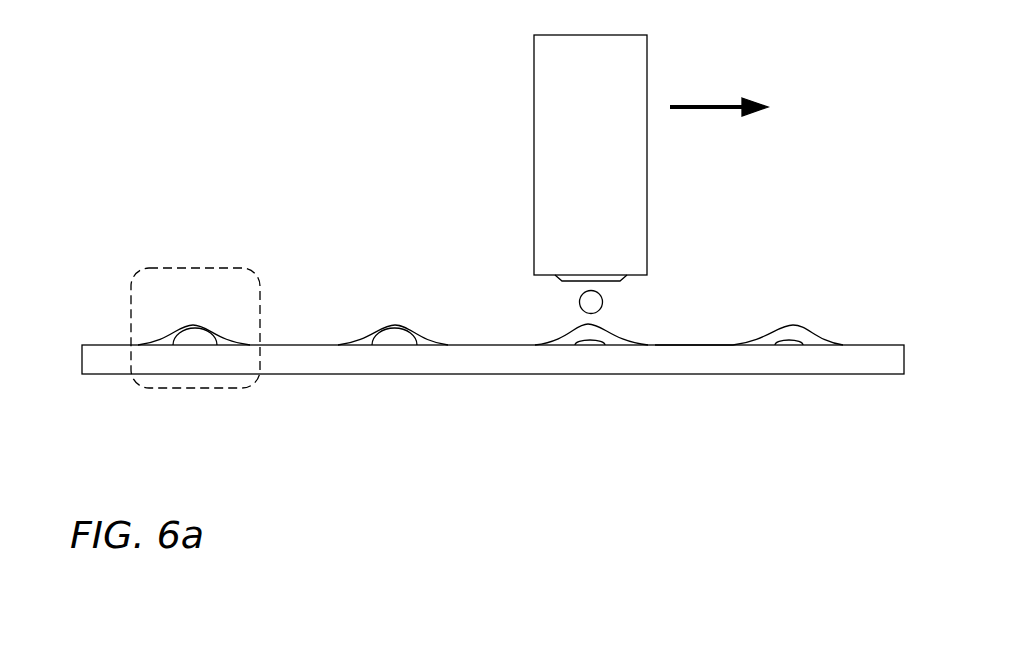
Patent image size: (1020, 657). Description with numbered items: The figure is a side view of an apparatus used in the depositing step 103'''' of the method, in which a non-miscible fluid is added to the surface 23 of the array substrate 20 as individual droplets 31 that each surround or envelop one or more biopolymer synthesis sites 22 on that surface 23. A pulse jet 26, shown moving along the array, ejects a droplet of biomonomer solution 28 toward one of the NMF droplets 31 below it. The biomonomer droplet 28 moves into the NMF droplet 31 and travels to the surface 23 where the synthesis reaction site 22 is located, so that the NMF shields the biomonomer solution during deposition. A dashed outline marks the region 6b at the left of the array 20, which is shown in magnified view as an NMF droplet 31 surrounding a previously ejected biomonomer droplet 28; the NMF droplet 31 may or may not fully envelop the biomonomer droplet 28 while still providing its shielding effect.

The step of depositing 103'''' is at (284, 90).
The FIG. 6b region 6b is at (185, 258).
The array substrate 20 is at (550, 357).
The biopolymer synthesis site 22 is at (782, 343).
The surface 23 is at (688, 345).
The pulse jet 26 is at (548, 107).
The biomonomer solution droplet 28 is at (394, 332).
The NMF droplet 31 is at (358, 340).